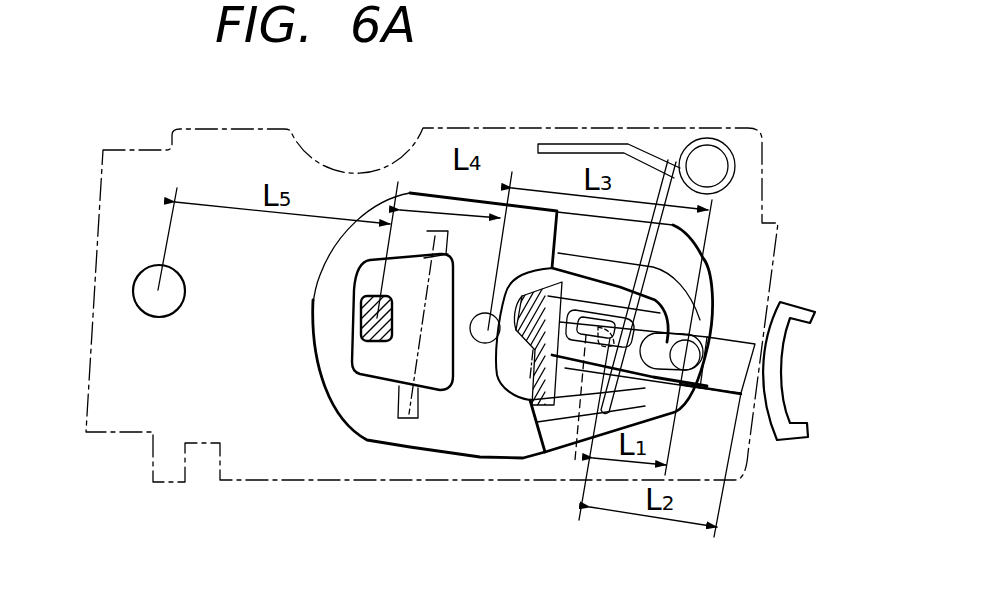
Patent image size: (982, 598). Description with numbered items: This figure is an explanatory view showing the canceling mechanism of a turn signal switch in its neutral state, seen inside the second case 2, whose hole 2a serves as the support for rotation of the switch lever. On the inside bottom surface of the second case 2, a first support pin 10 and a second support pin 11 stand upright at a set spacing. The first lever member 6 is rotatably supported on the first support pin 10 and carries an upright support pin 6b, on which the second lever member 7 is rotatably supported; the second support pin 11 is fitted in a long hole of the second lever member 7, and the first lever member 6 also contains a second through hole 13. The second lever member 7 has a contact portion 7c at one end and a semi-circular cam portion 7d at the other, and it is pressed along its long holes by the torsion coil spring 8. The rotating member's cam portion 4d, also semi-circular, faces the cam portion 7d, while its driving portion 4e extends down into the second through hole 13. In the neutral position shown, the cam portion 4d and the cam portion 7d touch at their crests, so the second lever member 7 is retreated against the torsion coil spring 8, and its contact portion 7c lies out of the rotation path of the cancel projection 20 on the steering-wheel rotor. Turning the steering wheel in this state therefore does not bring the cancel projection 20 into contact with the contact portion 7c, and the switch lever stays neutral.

The second case 2 is at (100, 433).
The hole 2a is at (133, 283).
The cam portion 4d is at (547, 272).
The driving portion 4e is at (357, 320).
The first lever member 6 is at (419, 192).
The support pin 6b is at (701, 362).
The second lever member 7 is at (728, 327).
The contact portion 7c is at (741, 357).
The cam portion 7d is at (530, 347).
The torsion coil spring 8 is at (646, 150).
The first support pin 10 is at (479, 348).
The second support pin 11 is at (575, 460).
The second through hole 13 is at (372, 373).
The cancel projection 20 is at (800, 303).